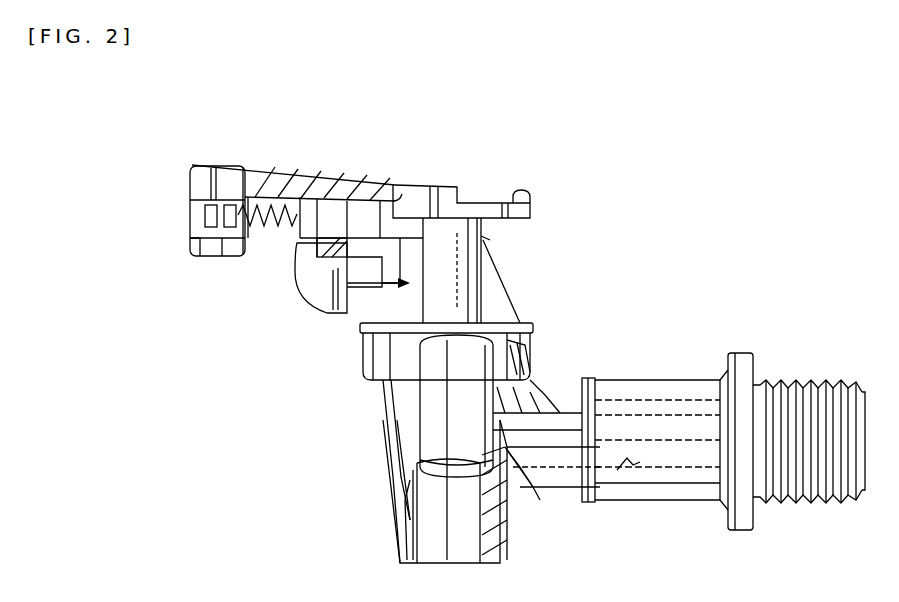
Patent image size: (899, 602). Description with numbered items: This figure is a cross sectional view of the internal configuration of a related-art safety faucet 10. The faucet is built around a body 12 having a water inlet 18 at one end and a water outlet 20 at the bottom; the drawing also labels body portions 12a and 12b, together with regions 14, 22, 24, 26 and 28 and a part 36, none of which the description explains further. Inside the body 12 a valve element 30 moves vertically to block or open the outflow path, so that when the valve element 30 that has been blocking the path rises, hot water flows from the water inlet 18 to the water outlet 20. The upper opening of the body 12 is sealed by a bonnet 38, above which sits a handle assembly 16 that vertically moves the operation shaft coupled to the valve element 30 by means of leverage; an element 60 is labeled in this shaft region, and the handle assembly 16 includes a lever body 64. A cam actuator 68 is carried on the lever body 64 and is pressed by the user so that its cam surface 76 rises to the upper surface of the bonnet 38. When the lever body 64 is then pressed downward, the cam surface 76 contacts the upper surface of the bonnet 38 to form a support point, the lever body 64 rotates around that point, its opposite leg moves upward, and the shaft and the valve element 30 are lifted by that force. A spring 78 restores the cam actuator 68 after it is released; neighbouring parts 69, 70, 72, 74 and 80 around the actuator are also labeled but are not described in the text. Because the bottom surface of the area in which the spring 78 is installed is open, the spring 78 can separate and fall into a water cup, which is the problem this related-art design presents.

The safety faucet 10 is at (605, 157).
The body 12 is at (652, 358).
The inlet portion 12a is at (667, 483).
The outlet portion 12b is at (383, 453).
The valve member 14 is at (305, 367).
The handle assembly 16 is at (442, 158).
The water inlet 18 is at (812, 503).
The water outlet 20 is at (413, 560).
The inlet passage 22 is at (612, 483).
The outlet passage 24 is at (487, 430).
The valve seat 26 is at (410, 497).
The body wall 28 is at (520, 483).
The valve element 30 is at (440, 413).
The nut 36 is at (535, 337).
The bonnet 38 is at (523, 323).
The valve stem 60 is at (425, 223).
The lever body 64 is at (340, 217).
The cam actuator 68 is at (175, 178).
The stop tab 69 is at (487, 200).
The lock housing 70 is at (312, 250).
The lock pin 72 is at (222, 257).
The lock cap 74 is at (183, 252).
The cam surface 76 is at (297, 293).
The spring 78 is at (243, 197).
The spring 80 is at (300, 203).